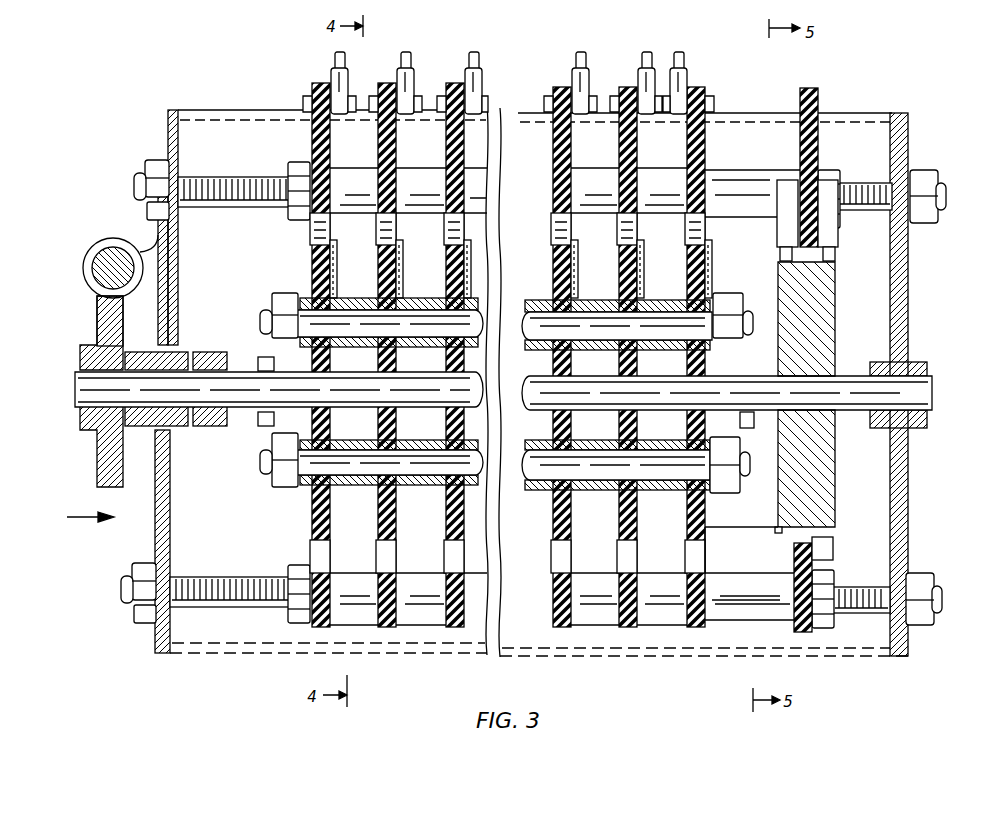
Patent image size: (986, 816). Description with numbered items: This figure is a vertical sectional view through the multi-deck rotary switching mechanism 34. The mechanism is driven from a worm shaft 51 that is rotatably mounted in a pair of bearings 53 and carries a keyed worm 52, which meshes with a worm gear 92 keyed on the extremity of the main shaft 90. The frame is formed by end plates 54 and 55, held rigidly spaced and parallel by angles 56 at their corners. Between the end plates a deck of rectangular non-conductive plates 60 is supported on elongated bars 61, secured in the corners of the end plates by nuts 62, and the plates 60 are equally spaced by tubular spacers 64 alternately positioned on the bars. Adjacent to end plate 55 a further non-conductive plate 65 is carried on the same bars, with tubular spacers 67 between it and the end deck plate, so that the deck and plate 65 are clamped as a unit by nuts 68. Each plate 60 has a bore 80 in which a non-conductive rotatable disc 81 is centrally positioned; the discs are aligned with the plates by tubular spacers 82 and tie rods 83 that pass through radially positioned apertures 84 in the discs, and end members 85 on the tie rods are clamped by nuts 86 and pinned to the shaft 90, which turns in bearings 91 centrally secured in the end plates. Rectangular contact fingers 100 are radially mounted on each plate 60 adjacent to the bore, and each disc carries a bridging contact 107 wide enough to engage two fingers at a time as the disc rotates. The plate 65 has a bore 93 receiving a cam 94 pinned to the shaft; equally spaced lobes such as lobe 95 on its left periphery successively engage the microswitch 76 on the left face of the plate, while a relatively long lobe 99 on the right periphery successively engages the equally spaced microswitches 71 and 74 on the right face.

The rotary switching mechanism 34 is at (75, 517).
The shaft 51 is at (98, 258).
The worm 52 is at (84, 275).
The bearing 53 is at (157, 240).
The end plate 54 is at (167, 143).
The end plate 55 is at (908, 158).
The angle 56 is at (237, 118).
The plate 60 is at (330, 158).
The elongated bar 61 is at (236, 182).
The nut 62 is at (145, 172).
The tubular spacer 64 is at (418, 172).
The plate 65 is at (818, 160).
The tubular spacer 67 is at (755, 172).
The nut 68 is at (298, 168).
The microswitch 71 is at (836, 234).
The microswitch 74 is at (834, 548).
The microswitch 76 is at (778, 234).
The bore 80 is at (330, 210).
The disc 81 is at (330, 431).
The tubular spacer 82 is at (346, 297).
The tie rod 83 is at (260, 322).
The aperture 84 is at (297, 298).
The end member 85 is at (260, 358).
The nut 86 is at (276, 296).
The shaft 90 is at (74, 376).
The bearing 91 is at (150, 352).
The worm gear 92 is at (90, 338).
The bore 93 is at (741, 550).
The cam 94 is at (836, 332).
The lobe 95 is at (780, 258).
The lobe 99 is at (835, 258).
The contact finger 100 is at (330, 236).
The bridging contact 107 is at (337, 272).